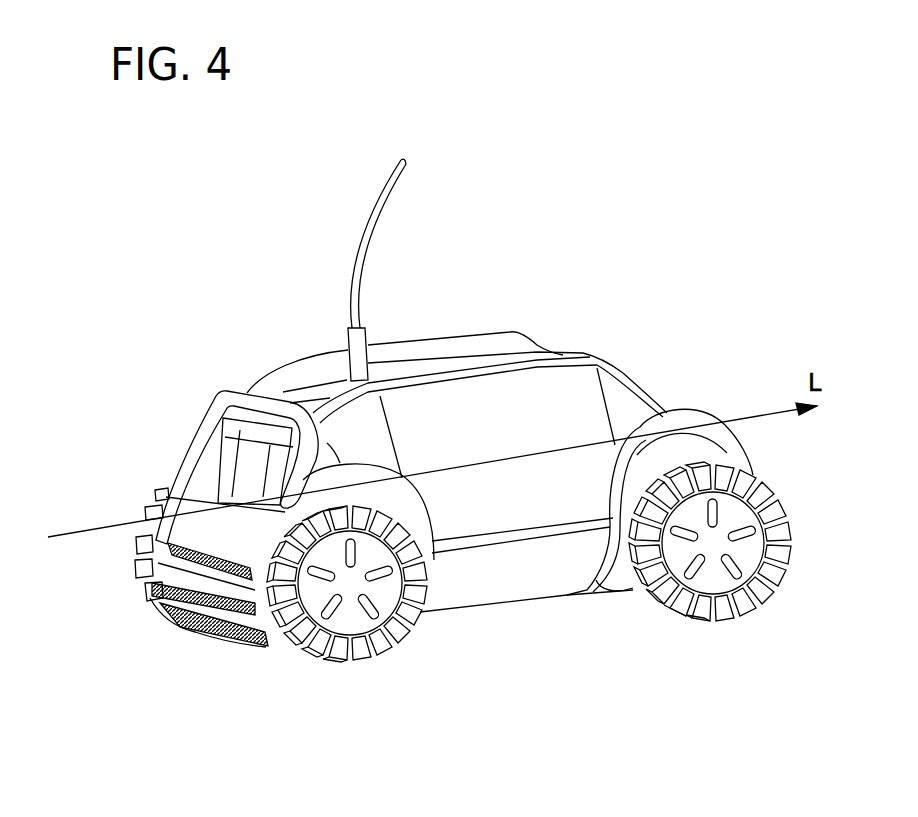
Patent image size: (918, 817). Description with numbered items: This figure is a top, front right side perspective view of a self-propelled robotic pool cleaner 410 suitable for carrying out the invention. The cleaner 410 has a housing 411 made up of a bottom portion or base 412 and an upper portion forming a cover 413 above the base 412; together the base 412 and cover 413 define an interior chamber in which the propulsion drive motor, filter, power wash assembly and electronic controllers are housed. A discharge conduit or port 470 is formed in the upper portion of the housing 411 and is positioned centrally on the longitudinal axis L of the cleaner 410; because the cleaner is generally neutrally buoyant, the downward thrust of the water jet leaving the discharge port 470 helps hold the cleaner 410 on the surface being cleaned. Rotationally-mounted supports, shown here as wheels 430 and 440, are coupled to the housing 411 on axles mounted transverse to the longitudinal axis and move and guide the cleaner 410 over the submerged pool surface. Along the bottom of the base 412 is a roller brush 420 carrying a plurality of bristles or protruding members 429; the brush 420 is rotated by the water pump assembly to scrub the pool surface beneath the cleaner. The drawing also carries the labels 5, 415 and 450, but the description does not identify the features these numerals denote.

The antenna 5 is at (367, 252).
The self-propelled robotic pool cleaner 410 is at (613, 338).
The housing 411 is at (698, 407).
The base 412 is at (567, 587).
The cover 413 is at (510, 335).
The rear skid plate 415 is at (614, 578).
The roller brush 420 is at (212, 641).
The bristles or protruding members 429 is at (272, 651).
The wheel 430 is at (395, 627).
The wheel 440 is at (737, 612).
The roll bar 450 is at (218, 394).
The discharge conduit or port 470 is at (249, 481).